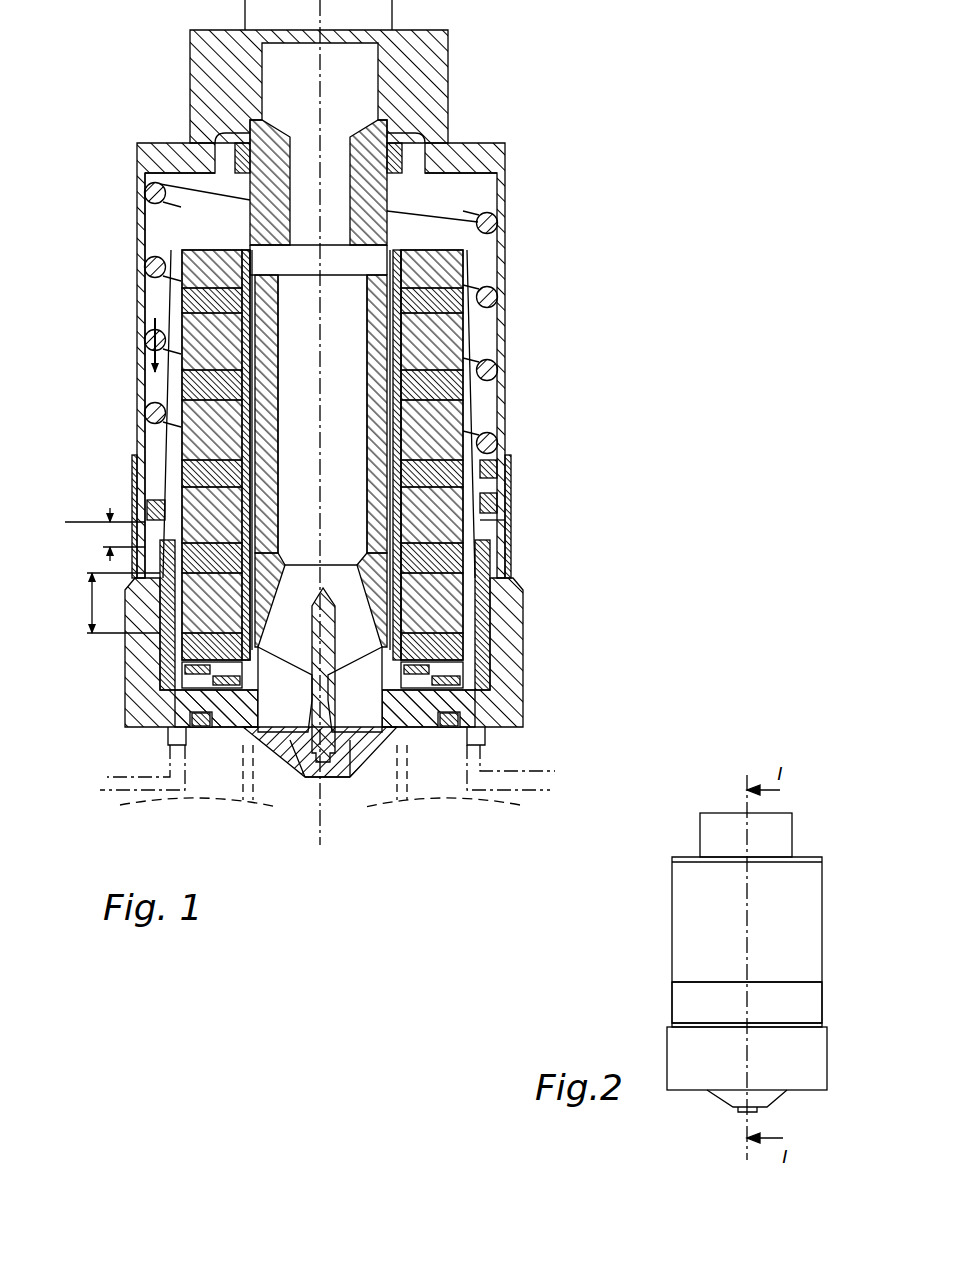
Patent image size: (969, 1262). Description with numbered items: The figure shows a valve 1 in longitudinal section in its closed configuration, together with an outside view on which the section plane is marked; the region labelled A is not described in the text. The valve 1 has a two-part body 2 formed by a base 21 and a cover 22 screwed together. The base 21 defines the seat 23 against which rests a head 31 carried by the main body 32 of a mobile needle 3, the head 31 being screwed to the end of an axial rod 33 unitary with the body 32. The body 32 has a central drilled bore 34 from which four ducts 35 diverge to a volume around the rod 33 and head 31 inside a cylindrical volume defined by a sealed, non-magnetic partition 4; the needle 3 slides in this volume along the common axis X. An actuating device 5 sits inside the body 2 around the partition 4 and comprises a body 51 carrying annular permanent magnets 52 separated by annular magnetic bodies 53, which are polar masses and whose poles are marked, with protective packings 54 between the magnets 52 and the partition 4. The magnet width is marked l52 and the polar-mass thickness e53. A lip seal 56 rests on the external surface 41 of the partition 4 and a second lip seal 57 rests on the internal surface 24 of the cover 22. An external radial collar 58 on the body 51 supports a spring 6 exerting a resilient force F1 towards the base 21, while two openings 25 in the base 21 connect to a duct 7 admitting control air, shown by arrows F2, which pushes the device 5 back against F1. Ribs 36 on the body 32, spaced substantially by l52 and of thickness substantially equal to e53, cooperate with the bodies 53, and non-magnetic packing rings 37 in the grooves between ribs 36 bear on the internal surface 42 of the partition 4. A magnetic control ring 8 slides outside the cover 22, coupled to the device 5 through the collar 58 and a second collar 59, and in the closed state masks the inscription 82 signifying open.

In FIG. 1, the valve 1 is at (677, 392).
In FIG. 2, the valve 1 is at (637, 960).
In FIG. 1, the two-part body 2 is at (512, 256).
In FIG. 2, the two-part body 2 is at (693, 902).
In FIG. 1, the mobile needle 3 is at (321, 461).
In FIG. 1, the sealed non-magnetic partition 4 is at (507, 617).
In FIG. 1, the actuating device 5 is at (487, 322).
In FIG. 1, the spring 6 is at (505, 203).
In FIG. 1, the duct 7 is at (122, 808).
In FIG. 1, the control ring 8 is at (512, 540).
In FIG. 2, the control ring 8 is at (683, 1000).
In FIG. 1, the base 21 is at (500, 662).
In FIG. 1, the cover 22 is at (502, 338).
In FIG. 1, the seat 23 is at (368, 762).
In FIG. 1, the internal surface of the cover 24 is at (140, 425).
In FIG. 1, the openings 25 is at (175, 733).
In FIG. 1, the head 31 is at (310, 792).
In FIG. 1, the main body of the needle 32 is at (373, 500).
In FIG. 1, the axial rod 33 is at (283, 762).
In FIG. 1, the central drilled bore 34 is at (298, 296).
In FIG. 1, the ducts 35 is at (245, 745).
In FIG. 1, the ribs 36 is at (175, 340).
In FIG. 1, the packing rings 37 is at (272, 478).
In FIG. 1, the external surface of the partition 41 is at (195, 678).
In FIG. 1, the internal surface of the partition 42 is at (378, 748).
In FIG. 1, the body of the actuating device 51 is at (470, 407).
In FIG. 1, the permanent magnets 52 is at (322, 441).
In FIG. 1, the magnetic bodies 53 is at (322, 474).
In FIG. 1, the protective packings 54 is at (400, 343).
In FIG. 1, the lip seal 56 is at (152, 688).
In FIG. 1, the second lip seal 57 is at (140, 510).
In FIG. 1, the external radial collar 58 is at (510, 465).
In FIG. 1, the second collar 59 is at (508, 528).
In FIG. 2, the inscription 82 is at (713, 960).
In FIG. 1, the magnetic assembly A is at (470, 400).
In FIG. 1, the axis X is at (332, 423).
In FIG. 1, the resilient force F1 is at (151, 358).
In FIG. 1, the control air admission arrows F2 is at (585, 778).
In FIG. 1, the thickness of a body e53 is at (105, 527).
In FIG. 1, the width of a magnet l52 is at (113, 603).